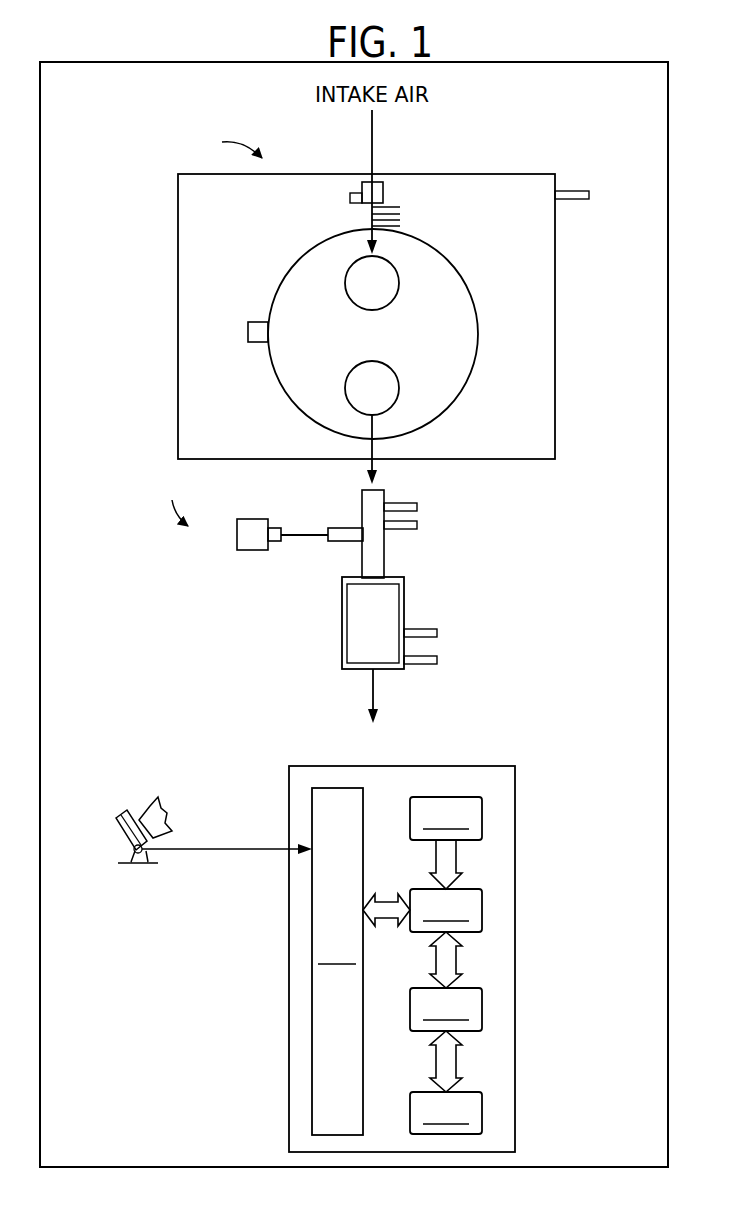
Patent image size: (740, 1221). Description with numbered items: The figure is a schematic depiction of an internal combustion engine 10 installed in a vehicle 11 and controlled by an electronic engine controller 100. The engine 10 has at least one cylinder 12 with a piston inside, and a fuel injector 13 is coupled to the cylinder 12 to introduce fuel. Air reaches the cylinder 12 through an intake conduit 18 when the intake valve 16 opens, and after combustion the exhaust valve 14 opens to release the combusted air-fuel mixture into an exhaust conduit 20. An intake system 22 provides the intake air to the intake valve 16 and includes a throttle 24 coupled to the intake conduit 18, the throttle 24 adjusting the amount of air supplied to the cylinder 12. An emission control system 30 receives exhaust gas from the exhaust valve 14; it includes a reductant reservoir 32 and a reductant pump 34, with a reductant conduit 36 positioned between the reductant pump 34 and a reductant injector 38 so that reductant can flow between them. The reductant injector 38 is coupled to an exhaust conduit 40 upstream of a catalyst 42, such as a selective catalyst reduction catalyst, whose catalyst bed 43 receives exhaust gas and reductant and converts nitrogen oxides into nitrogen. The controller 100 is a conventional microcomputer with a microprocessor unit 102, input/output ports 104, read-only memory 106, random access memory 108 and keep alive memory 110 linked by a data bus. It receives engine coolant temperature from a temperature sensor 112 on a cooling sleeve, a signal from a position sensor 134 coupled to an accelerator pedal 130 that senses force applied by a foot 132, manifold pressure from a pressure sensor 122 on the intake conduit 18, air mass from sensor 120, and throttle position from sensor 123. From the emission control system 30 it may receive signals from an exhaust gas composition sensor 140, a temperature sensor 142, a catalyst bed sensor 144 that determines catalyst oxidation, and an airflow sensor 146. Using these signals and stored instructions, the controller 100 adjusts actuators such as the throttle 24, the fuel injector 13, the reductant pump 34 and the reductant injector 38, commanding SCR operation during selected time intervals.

The internal combustion engine 10 is at (555, 292).
The vehicle 11 is at (668, 96).
The cylinder 12 is at (384, 348).
The fuel injector 13 is at (258, 342).
The exhaust valve 14 is at (399, 390).
The intake valve 16 is at (398, 280).
The intake conduit 18 is at (372, 160).
The exhaust conduit 20 is at (375, 446).
The intake system 22 is at (227, 145).
The throttle 24 is at (362, 188).
The emission control system 30 is at (174, 502).
The reductant reservoir 32 is at (252, 519).
The reductant pump 34 is at (276, 541).
The reductant conduit 36 is at (302, 535).
The reductant injector 38 is at (345, 528).
The exhaust conduit 40 is at (384, 570).
The catalyst 42 is at (404, 608).
The catalyst bed 43 is at (344, 618).
The electronic engine controller 100 is at (515, 766).
The microprocessor unit 102 is at (482, 905).
The input/output ports 104 is at (363, 797).
The read-only memory 106 is at (482, 815).
The random access memory 108 is at (482, 1010).
The keep alive memory 110 is at (482, 1112).
The temperature sensor 112 is at (592, 196).
The air mass sensor 120 is at (400, 210).
The pressure sensor 122 is at (400, 224).
The throttle position sensor 123 is at (350, 198).
The accelerator pedal 130 is at (118, 826).
The foot 132 is at (165, 814).
The position sensor 134 is at (150, 857).
The exhaust gas composition sensor 140 is at (418, 507).
The temperature sensor 142 is at (438, 633).
The catalyst bed sensor 144 is at (438, 660).
The airflow sensor 146 is at (418, 525).